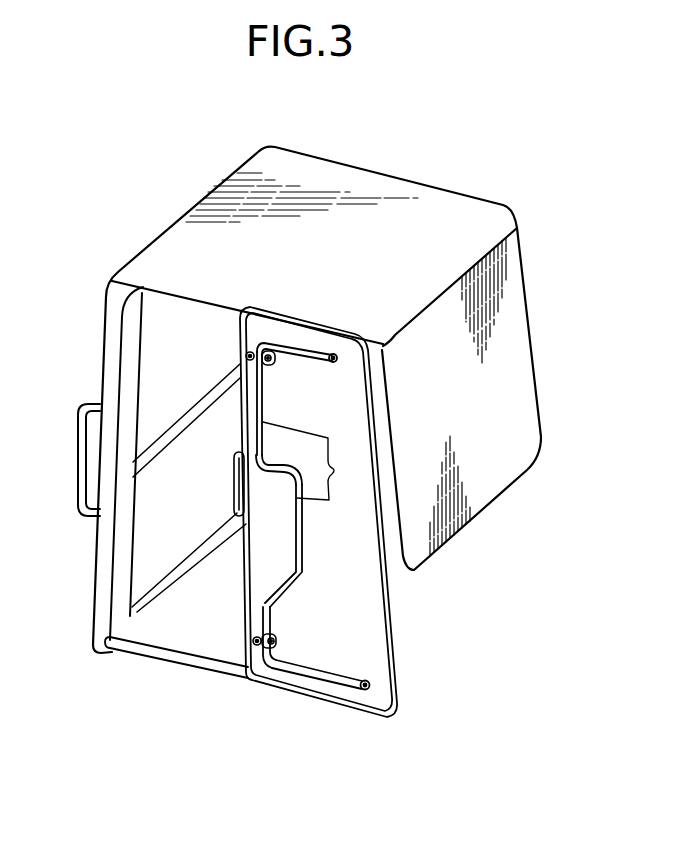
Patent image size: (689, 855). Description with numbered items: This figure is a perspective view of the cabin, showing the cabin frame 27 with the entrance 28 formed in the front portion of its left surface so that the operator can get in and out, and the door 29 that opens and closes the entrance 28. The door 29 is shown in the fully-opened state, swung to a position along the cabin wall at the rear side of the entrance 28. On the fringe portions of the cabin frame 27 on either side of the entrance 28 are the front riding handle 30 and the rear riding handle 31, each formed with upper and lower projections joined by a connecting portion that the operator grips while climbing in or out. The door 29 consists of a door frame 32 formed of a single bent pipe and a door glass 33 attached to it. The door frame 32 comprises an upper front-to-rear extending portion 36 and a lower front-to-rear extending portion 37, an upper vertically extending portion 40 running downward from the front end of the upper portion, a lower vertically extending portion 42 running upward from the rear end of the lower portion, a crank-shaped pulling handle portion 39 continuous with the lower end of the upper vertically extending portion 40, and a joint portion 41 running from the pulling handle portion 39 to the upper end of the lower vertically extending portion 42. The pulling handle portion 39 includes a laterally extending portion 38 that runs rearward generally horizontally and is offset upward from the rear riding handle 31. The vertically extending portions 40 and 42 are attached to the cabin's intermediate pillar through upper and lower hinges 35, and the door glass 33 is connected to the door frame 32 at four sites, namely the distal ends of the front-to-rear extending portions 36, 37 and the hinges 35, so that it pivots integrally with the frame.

The cabin frame 27 is at (530, 290).
The entrance 28 is at (160, 322).
The door 29 is at (293, 520).
The front riding handle 30 is at (78, 458).
The rear riding handle 31 is at (236, 456).
The door frame 32 is at (270, 676).
The door glass 33 is at (372, 645).
The hinge 35 is at (244, 355).
The upper front-to-rear extending portion 36 is at (297, 346).
The lower front-to-rear extending portion 37 is at (317, 678).
The laterally extending portion 38 is at (270, 472).
The pulling handle portion 39 is at (316, 461).
The upper vertically extending portion 40 is at (264, 390).
The joint portion 41 is at (302, 540).
The lower vertically extending portion 42 is at (271, 620).